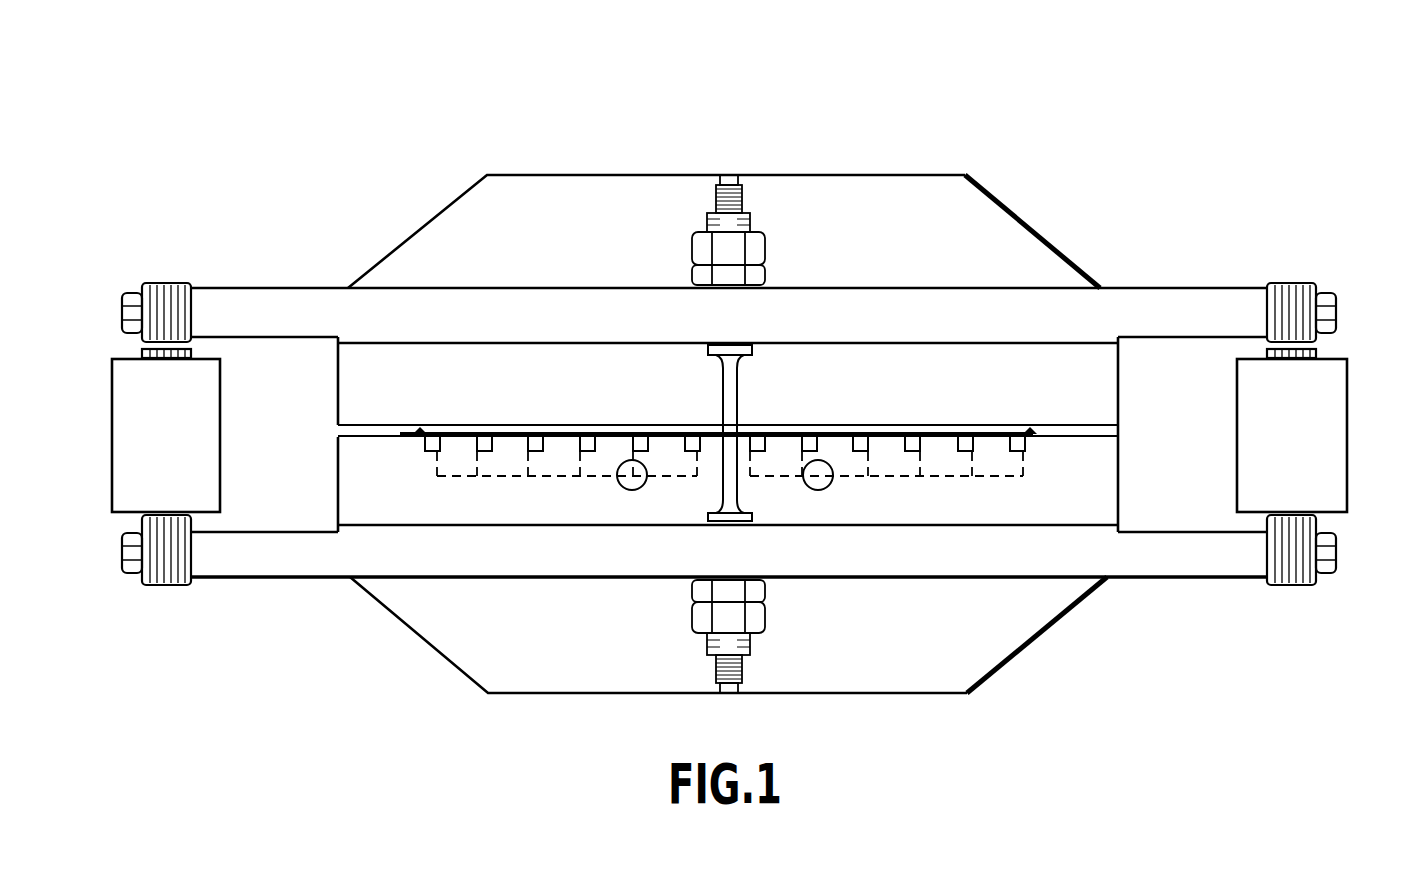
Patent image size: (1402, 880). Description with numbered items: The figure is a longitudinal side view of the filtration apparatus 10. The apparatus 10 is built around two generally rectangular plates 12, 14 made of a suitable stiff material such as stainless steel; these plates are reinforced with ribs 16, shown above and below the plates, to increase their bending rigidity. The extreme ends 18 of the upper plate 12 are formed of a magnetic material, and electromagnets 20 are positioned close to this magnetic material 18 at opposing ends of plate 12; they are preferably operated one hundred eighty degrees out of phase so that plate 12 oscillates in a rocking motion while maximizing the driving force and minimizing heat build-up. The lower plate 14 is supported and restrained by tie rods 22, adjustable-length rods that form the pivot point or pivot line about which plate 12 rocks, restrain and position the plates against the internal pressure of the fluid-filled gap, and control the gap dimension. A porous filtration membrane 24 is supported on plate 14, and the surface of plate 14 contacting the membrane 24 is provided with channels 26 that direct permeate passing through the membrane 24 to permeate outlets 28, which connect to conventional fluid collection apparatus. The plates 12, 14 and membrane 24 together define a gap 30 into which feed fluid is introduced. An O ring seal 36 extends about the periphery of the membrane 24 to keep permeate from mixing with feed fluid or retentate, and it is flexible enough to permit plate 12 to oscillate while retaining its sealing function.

The filtration apparatus 10 is at (1062, 52).
The plate 12 is at (1130, 300).
The plate 14 is at (1178, 568).
The ribs 16 is at (1005, 233).
The extreme ends of plate 18 is at (175, 283).
The electromagnets 20 is at (142, 470).
The tie rods 22 is at (738, 415).
The porous filtration membrane 24 is at (553, 432).
The channels 26 is at (527, 442).
The permeate outlets 28 is at (620, 482).
The gap 30 is at (322, 421).
The O ring seal 36 is at (418, 440).